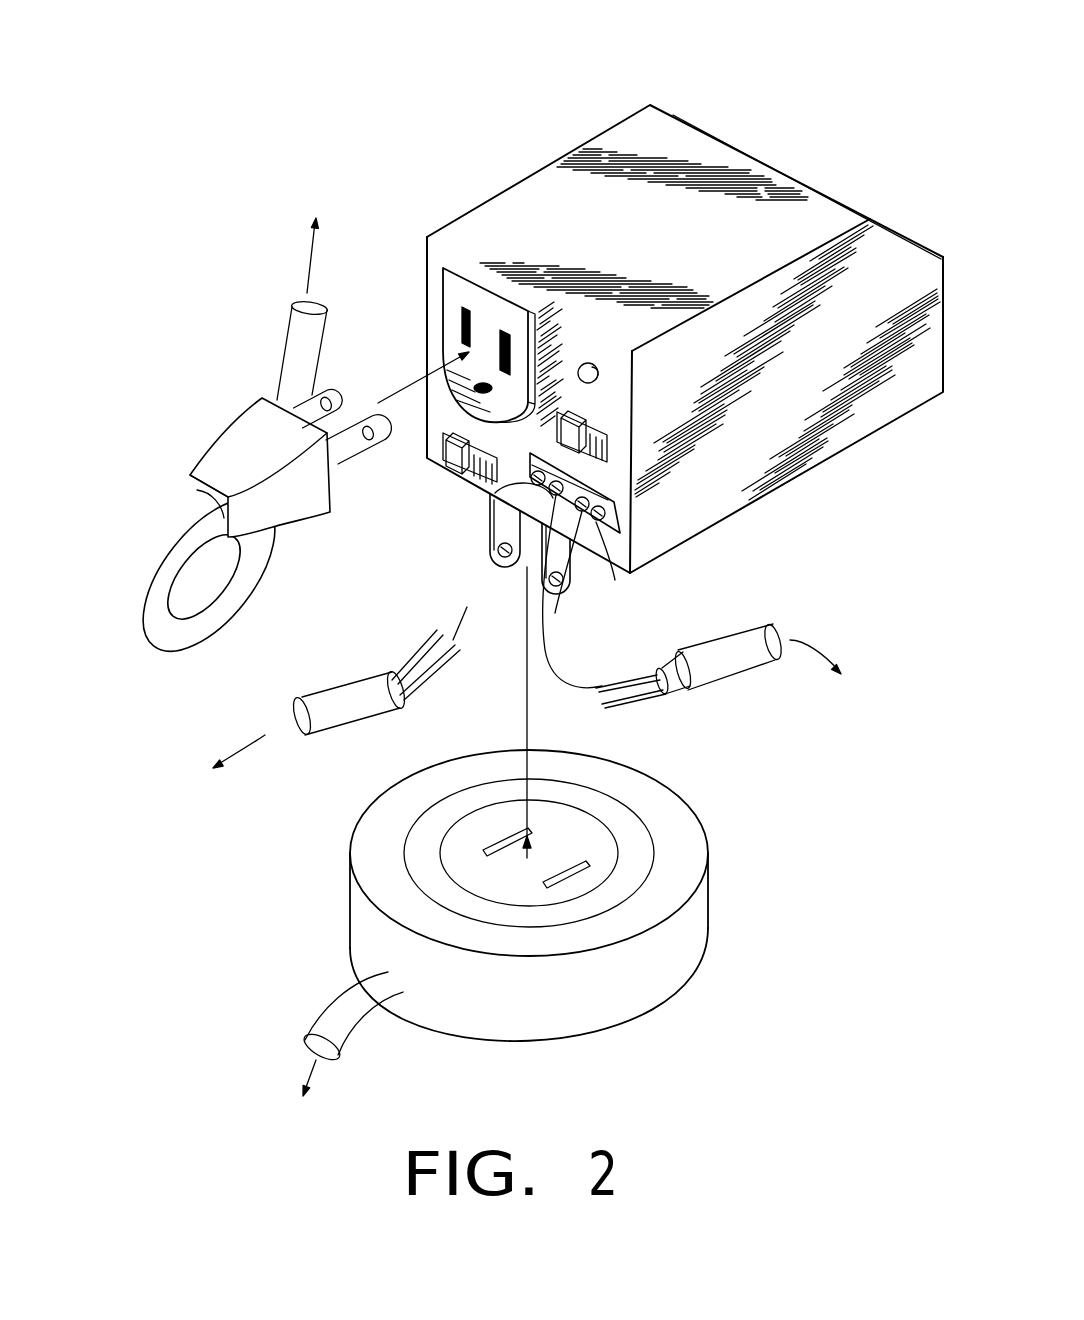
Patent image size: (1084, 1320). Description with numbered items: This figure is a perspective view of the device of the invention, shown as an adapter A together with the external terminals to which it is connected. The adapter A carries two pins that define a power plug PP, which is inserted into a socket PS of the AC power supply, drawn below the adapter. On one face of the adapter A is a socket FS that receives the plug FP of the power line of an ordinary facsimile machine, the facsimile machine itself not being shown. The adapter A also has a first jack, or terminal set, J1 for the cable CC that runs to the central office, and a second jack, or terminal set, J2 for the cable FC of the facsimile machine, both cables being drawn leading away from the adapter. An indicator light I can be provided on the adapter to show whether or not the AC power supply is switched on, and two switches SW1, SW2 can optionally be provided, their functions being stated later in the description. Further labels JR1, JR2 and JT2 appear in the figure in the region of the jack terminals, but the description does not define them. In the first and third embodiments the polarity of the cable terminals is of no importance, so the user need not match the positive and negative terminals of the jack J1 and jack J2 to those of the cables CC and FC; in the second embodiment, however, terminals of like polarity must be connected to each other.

The adapter A is at (878, 100).
The socket FS is at (453, 300).
The plug FP is at (228, 447).
The indicator light I is at (605, 374).
The switch SW1 is at (607, 440).
The switch SW2 is at (428, 462).
The ring terminal JR1 is at (485, 525).
The ring terminal JR2 is at (637, 613).
The first jack J1 is at (460, 592).
The terminal JT2 is at (586, 572).
The second jack J2 is at (626, 675).
The cable FC is at (688, 643).
The cable CC is at (368, 683).
The power plug PP is at (522, 596).
The socket PS is at (672, 822).